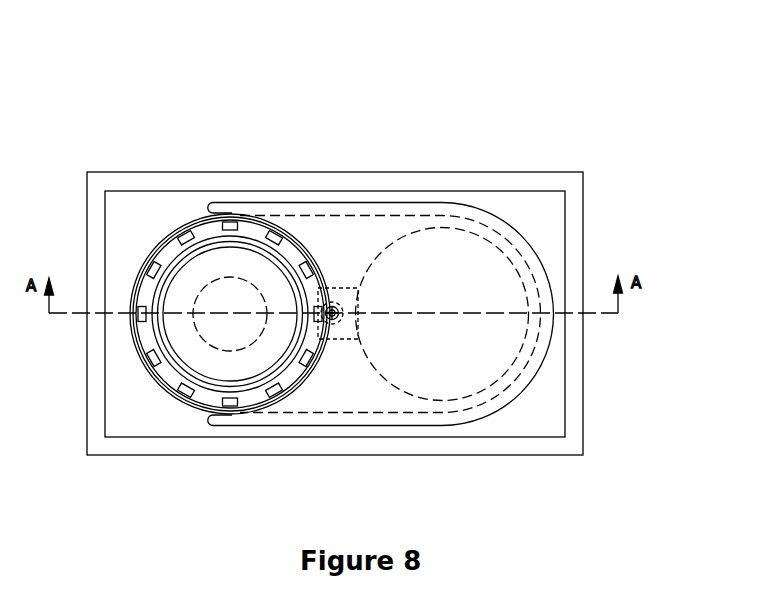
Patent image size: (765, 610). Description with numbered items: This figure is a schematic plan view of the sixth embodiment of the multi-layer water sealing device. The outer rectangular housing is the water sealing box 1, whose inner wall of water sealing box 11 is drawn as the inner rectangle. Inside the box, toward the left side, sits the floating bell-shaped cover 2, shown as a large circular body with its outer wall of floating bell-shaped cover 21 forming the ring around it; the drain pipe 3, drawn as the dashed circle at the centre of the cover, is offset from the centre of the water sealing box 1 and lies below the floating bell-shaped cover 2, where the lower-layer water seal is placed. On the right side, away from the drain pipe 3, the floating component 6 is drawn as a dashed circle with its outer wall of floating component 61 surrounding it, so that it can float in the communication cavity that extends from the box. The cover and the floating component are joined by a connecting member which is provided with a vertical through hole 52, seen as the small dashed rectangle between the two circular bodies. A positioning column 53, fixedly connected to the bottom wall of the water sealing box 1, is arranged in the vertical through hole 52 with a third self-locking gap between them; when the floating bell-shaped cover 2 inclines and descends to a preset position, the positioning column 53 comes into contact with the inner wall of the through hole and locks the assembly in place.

The water sealing box 1 is at (112, 208).
The inner wall of water sealing box 11 is at (168, 233).
The floating bell-shaped cover 2 is at (207, 257).
The outer wall of floating bell-shaped cover 21 is at (270, 250).
The drain pipe 3 is at (220, 349).
The vertical through hole 52 is at (325, 292).
The positioning column 53 is at (333, 307).
The floating component 6 is at (392, 263).
The outer wall of floating component 61 is at (445, 227).